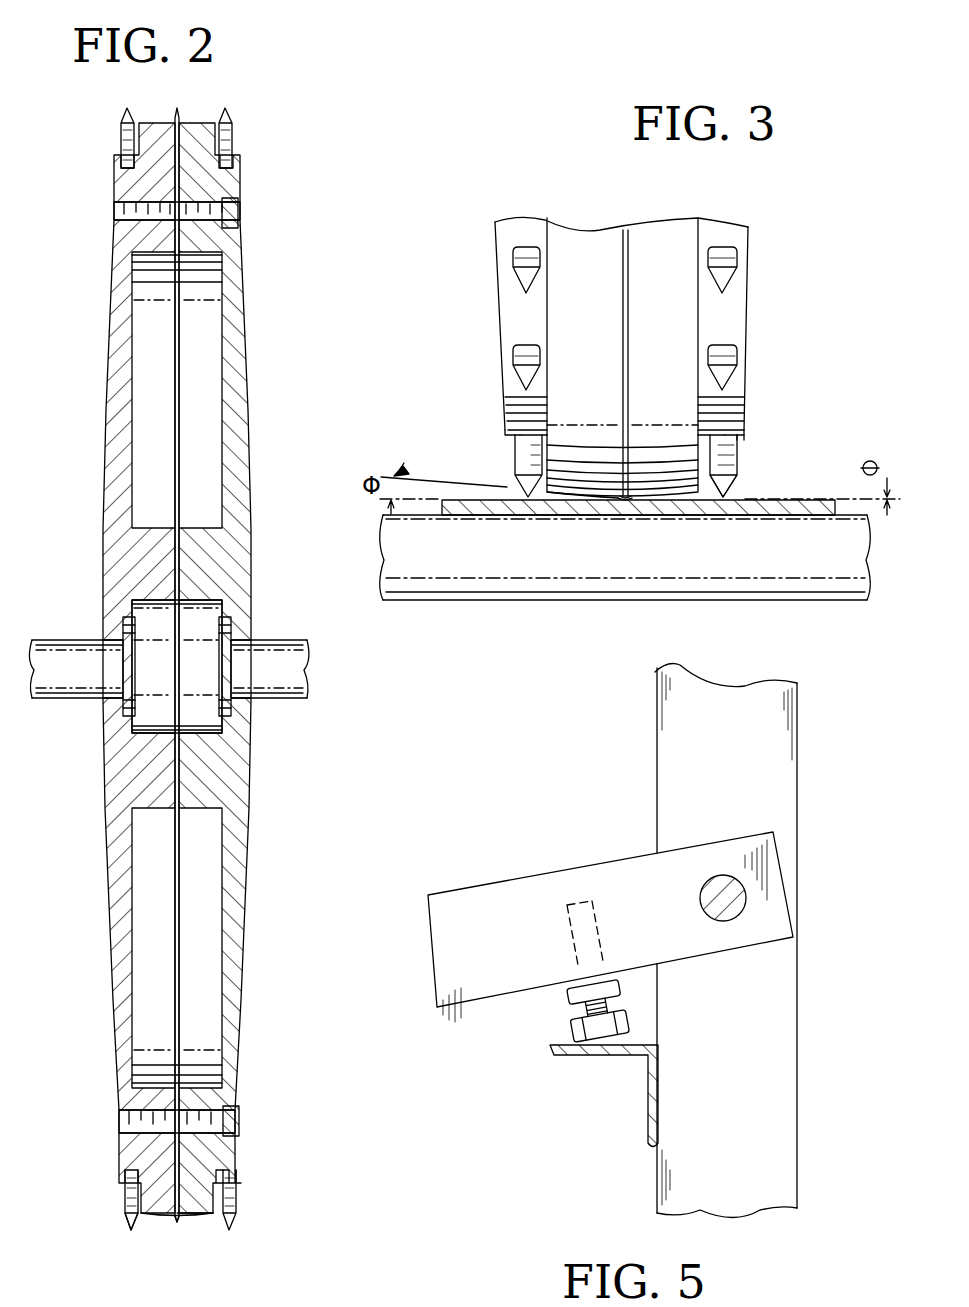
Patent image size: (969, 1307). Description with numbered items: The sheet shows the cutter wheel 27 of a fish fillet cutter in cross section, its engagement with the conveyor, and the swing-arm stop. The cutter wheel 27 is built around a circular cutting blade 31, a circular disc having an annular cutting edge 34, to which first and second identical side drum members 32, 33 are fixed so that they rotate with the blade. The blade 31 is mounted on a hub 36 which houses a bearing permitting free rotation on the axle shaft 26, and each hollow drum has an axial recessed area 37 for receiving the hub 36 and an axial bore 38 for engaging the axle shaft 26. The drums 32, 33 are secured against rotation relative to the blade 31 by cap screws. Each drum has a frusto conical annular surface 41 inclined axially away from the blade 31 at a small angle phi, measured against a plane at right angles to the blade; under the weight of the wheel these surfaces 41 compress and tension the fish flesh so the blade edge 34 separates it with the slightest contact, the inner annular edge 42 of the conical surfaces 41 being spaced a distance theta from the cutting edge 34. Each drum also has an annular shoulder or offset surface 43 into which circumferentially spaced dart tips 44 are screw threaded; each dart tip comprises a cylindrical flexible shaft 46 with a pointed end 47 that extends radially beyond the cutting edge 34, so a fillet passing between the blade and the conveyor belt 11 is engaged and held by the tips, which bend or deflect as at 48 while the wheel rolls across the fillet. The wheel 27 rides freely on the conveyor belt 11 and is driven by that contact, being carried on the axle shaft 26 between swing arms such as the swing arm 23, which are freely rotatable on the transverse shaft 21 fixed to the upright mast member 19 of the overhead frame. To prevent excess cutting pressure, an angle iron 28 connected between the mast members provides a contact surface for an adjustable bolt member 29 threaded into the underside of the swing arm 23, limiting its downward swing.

In FIG. 3, the conveyor belt 11 is at (568, 512).
In FIG. 5, the mast member 19 is at (798, 1074).
In FIG. 5, the transverse shaft 21 is at (700, 894).
In FIG. 5, the swing arm 23 is at (530, 878).
In FIG. 2, the axle shaft 26 is at (297, 638).
In FIG. 2, the cutter wheel 27 is at (213, 668).
In FIG. 3, the cutter wheel 27 is at (762, 272).
In FIG. 5, the angle iron 28 is at (592, 1060).
In FIG. 5, the adjustable bolt member 29 is at (568, 1012).
In FIG. 2, the circular cutting blade 31 is at (182, 996).
In FIG. 3, the circular cutting blade 31 is at (632, 284).
In FIG. 3, the side drum member 32 is at (682, 334).
In FIG. 3, the side drum member 33 is at (570, 306).
In FIG. 2, the annular cutting edge 34 is at (180, 1220).
In FIG. 3, the annular cutting edge 34 is at (628, 494).
In FIG. 2, the hub 36 is at (222, 724).
In FIG. 2, the axial recessed area 37 is at (232, 748).
In FIG. 2, the axial bore 38 is at (244, 626).
In FIG. 3, the frusto conical annular surface 41 is at (577, 490).
In FIG. 3, the inner annular edge 42 is at (622, 502).
In FIG. 2, the annular shoulder 43 is at (238, 1186).
In FIG. 3, the annular shoulder 43 is at (738, 422).
In FIG. 3, the dart tip 44 is at (752, 442).
In FIG. 2, the cylindrical flexible shaft 46 is at (125, 1196).
In FIG. 3, the cylindrical flexible shaft 46 is at (740, 462).
In FIG. 2, the pointed end 47 is at (125, 1222).
In FIG. 3, the pointed end 47 is at (732, 490).
In FIG. 3, the deflection 48 is at (728, 512).